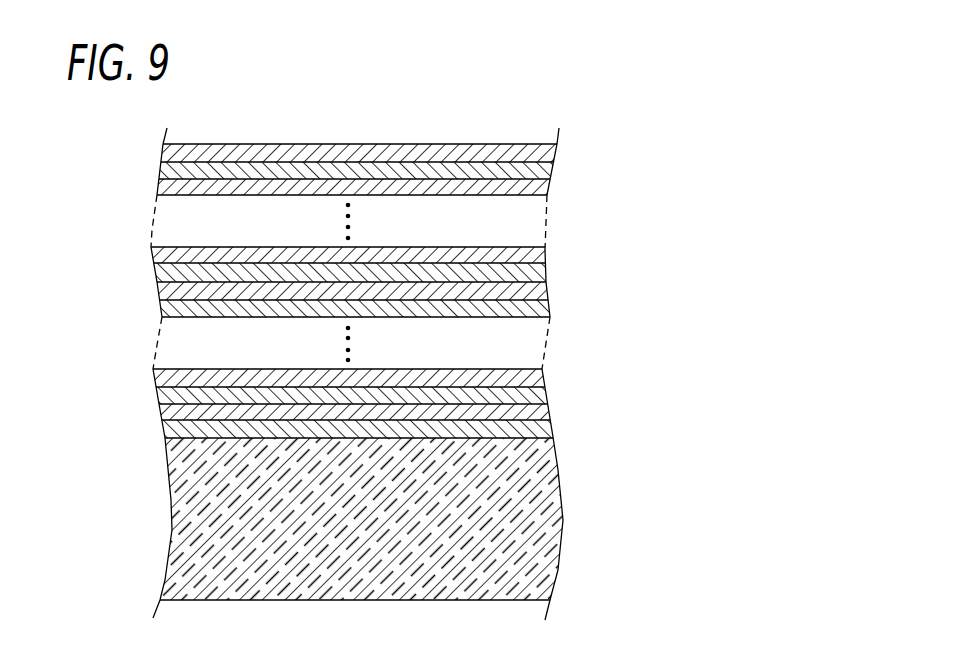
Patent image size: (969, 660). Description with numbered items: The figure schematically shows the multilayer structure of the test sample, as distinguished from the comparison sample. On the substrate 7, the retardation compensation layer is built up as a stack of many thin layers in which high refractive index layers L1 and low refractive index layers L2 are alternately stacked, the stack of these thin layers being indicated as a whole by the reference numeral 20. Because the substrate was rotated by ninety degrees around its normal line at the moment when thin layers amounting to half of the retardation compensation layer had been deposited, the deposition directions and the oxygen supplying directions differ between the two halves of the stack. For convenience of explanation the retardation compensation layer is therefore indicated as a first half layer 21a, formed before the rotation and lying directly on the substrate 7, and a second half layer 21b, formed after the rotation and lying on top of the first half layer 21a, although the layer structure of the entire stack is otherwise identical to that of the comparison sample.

The laminate of layers 20 is at (483, 141).
The first half layer 21a is at (146, 289).
The second half layer 21b is at (145, 143).
The high refractive index layer L1 is at (548, 174).
The low refractive index layer L2 is at (557, 155).
The substrate 7 is at (563, 518).